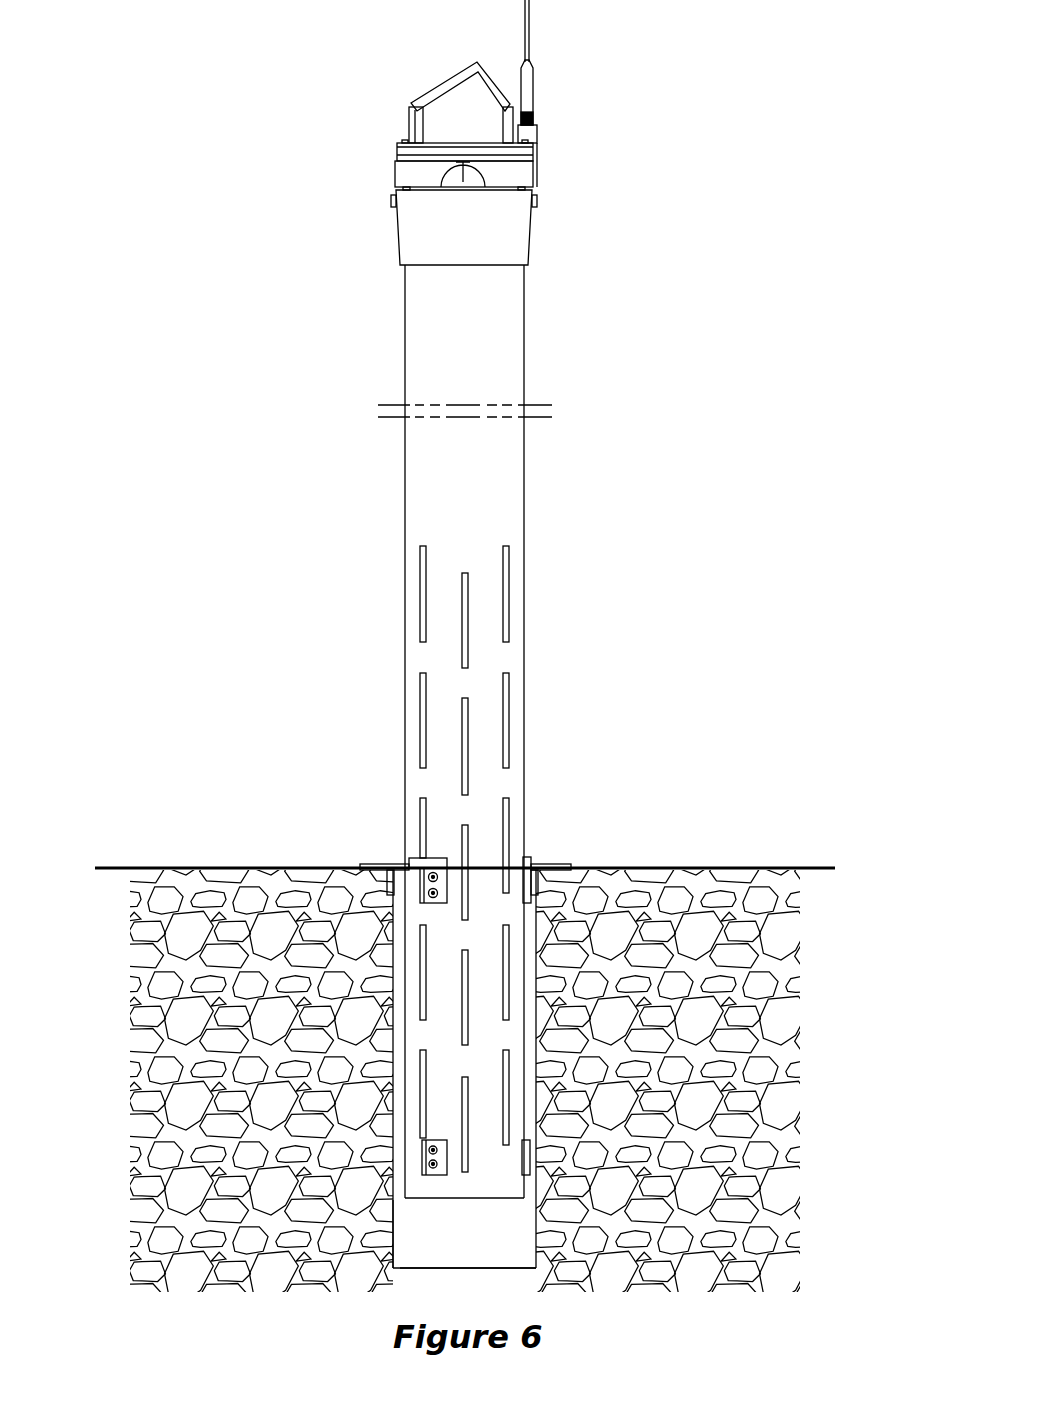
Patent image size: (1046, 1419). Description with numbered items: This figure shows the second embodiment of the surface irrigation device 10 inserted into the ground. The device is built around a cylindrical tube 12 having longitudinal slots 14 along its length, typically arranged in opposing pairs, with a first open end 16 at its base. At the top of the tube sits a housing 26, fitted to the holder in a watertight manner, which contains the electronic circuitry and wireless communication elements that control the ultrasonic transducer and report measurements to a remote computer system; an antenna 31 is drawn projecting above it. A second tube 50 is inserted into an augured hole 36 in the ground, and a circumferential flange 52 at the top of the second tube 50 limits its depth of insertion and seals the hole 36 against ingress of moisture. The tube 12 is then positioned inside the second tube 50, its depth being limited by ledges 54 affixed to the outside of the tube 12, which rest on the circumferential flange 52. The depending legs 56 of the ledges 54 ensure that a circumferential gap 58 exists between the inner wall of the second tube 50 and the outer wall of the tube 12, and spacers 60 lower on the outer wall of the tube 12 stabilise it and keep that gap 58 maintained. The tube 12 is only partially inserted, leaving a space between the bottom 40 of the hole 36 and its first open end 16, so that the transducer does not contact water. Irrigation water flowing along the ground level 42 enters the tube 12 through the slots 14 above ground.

The surface irrigation device 10 is at (152, 54).
The cylindrical tube 12 is at (525, 330).
The longitudinal slots 14 is at (426, 560).
The first open end 16 is at (495, 1198).
The housing 26 is at (503, 102).
The antenna 31 is at (529, 30).
The augured hole 36 is at (475, 1255).
The bottom of hole 40 is at (536, 1268).
The ground level 42 is at (690, 866).
The second tube 50 is at (393, 1212).
The circumferential flange 52 is at (370, 865).
The ledges 54 is at (420, 860).
The depending legs 56 is at (362, 868).
The circumferential gap 58 is at (528, 1025).
The spacers 60 is at (422, 1157).